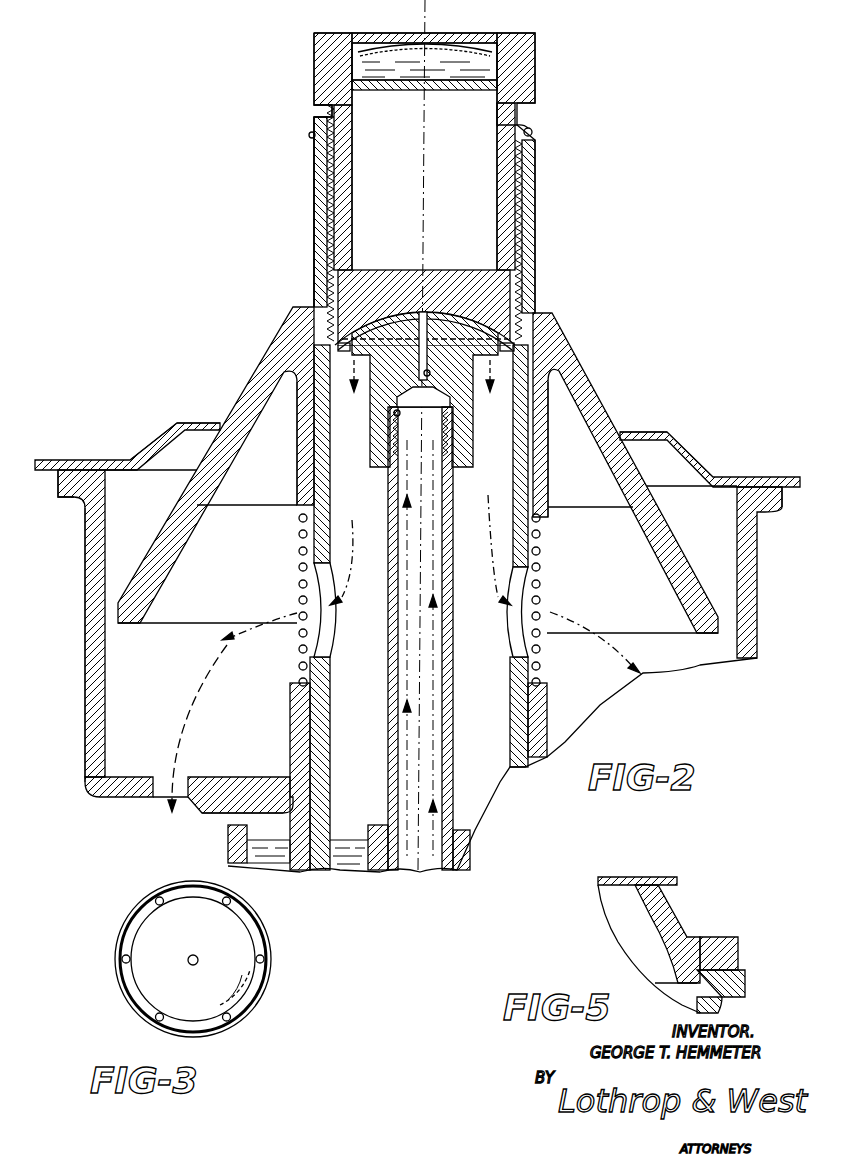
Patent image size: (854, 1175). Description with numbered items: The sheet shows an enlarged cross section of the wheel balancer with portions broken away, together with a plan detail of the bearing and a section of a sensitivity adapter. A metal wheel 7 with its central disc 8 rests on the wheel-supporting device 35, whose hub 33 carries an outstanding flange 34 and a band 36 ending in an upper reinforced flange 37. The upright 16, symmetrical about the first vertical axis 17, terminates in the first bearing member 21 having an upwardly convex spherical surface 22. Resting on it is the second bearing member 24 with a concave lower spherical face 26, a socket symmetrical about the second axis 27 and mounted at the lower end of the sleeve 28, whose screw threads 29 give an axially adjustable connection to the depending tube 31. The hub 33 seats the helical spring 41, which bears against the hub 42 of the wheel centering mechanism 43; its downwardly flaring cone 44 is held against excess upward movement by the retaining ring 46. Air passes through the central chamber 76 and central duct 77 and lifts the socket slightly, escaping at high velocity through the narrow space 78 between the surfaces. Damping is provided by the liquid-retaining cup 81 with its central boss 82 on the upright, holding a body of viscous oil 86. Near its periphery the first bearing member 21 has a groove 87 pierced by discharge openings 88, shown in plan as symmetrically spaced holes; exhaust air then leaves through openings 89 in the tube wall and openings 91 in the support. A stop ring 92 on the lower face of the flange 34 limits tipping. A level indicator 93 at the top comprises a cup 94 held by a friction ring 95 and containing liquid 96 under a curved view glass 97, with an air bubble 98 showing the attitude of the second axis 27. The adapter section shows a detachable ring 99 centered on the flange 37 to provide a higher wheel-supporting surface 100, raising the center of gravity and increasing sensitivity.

In FIG. 2, the metal wheel 7 is at (56, 460).
In FIG. 5, the metal wheel 7 is at (618, 877).
In FIG. 2, the central disc 8 is at (185, 422).
In FIG. 2, the upright 16 is at (387, 742).
In FIG. 2, the first vertical axis 17 is at (420, 783).
In FIG. 2, the first bearing member 21 is at (378, 472).
In FIG. 3, the first bearing member 21 is at (272, 940).
In FIG. 2, the spherical surface 22 is at (436, 312).
In FIG. 3, the spherical surface 22 is at (212, 931).
In FIG. 2, the second bearing member 24 is at (378, 270).
In FIG. 2, the lower spherical face 26 is at (462, 308).
In FIG. 2, the second axis 27 is at (422, 188).
In FIG. 2, the sleeve 28 is at (500, 122).
In FIG. 2, the screw threads 29 is at (531, 128).
In FIG. 2, the depending tube 31 is at (537, 196).
In FIG. 2, the hub 33 is at (302, 822).
In FIG. 2, the outstanding flange 34 is at (252, 786).
In FIG. 2, the wheel-supporting device 35 is at (84, 632).
In FIG. 5, the wheel-supporting device 35 is at (737, 1006).
In FIG. 2, the band 36 is at (84, 717).
In FIG. 2, the upper reinforced flange 37 is at (62, 500).
In FIG. 5, the upper reinforced flange 37 is at (745, 984).
In FIG. 2, the helical spring 41 is at (299, 551).
In FIG. 2, the hub of wheel centering mechanism 42 is at (293, 506).
In FIG. 2, the wheel centering mechanism 43 is at (290, 311).
In FIG. 2, the cone 44 is at (258, 398).
In FIG. 2, the retaining ring 46 is at (309, 135).
In FIG. 2, the central chamber 76 is at (393, 416).
In FIG. 2, the central duct 77 is at (430, 380).
In FIG. 3, the central duct 77 is at (191, 956).
In FIG. 2, the space 78 is at (383, 328).
In FIG. 2, the liquid-retaining cup 81 is at (226, 845).
In FIG. 2, the central boss 82 is at (462, 838).
In FIG. 2, the body of viscous oil 86 is at (346, 856).
In FIG. 2, the groove 87 is at (518, 316).
In FIG. 3, the groove 87 is at (188, 897).
In FIG. 2, the discharge openings 88 is at (514, 345).
In FIG. 3, the discharge openings 88 is at (122, 958).
In FIG. 2, the openings in tube wall 89 is at (328, 646).
In FIG. 2, the openings to atmosphere 91 is at (160, 786).
In FIG. 2, the stop ring 92 is at (203, 810).
In FIG. 2, the level indicator 93 is at (505, 68).
In FIG. 2, the cup 94 is at (376, 90).
In FIG. 2, the friction ring 95 is at (313, 72).
In FIG. 2, the liquid 96 is at (483, 60).
In FIG. 2, the curved view glass 97 is at (385, 50).
In FIG. 2, the air bubble 98 is at (442, 52).
In FIG. 5, the detachable ring 99 is at (729, 940).
In FIG. 5, the higher wheel-supporting surface 100 is at (650, 877).